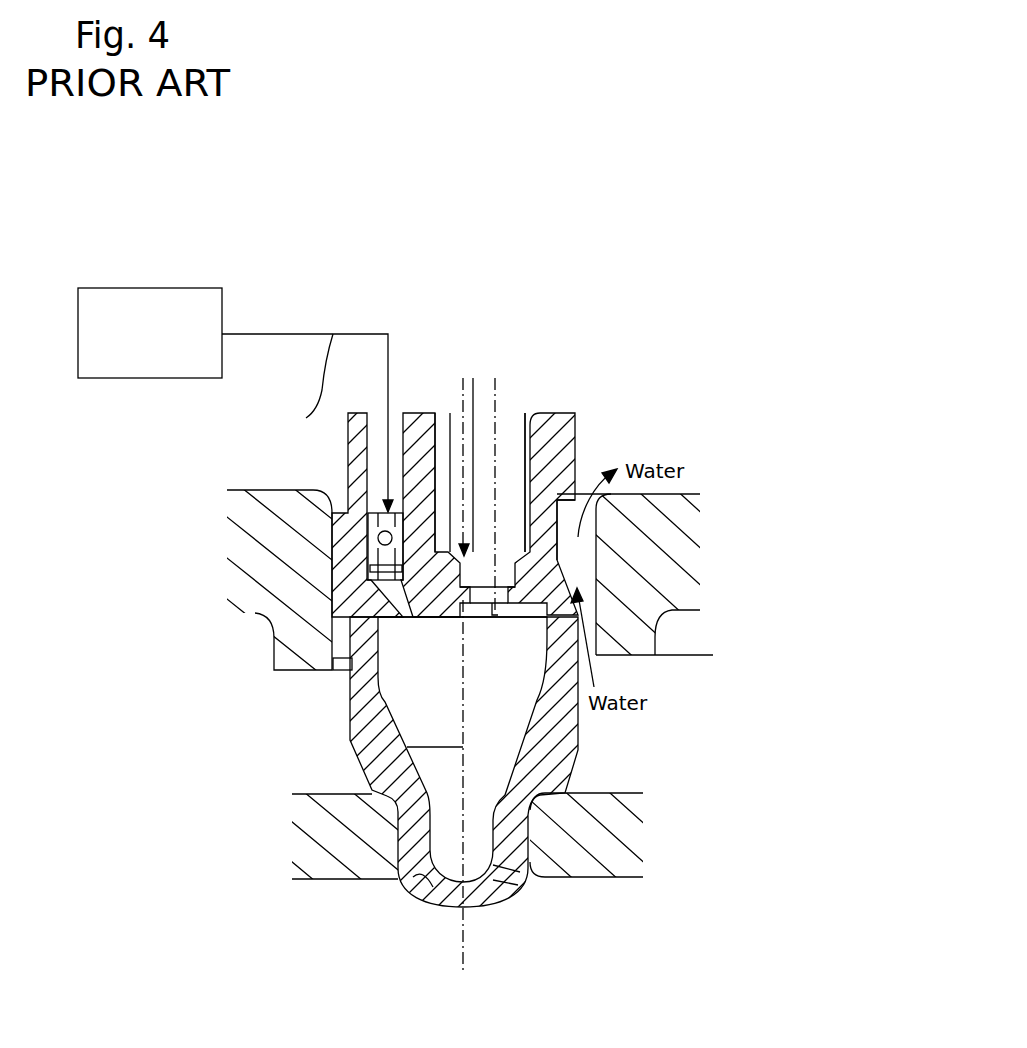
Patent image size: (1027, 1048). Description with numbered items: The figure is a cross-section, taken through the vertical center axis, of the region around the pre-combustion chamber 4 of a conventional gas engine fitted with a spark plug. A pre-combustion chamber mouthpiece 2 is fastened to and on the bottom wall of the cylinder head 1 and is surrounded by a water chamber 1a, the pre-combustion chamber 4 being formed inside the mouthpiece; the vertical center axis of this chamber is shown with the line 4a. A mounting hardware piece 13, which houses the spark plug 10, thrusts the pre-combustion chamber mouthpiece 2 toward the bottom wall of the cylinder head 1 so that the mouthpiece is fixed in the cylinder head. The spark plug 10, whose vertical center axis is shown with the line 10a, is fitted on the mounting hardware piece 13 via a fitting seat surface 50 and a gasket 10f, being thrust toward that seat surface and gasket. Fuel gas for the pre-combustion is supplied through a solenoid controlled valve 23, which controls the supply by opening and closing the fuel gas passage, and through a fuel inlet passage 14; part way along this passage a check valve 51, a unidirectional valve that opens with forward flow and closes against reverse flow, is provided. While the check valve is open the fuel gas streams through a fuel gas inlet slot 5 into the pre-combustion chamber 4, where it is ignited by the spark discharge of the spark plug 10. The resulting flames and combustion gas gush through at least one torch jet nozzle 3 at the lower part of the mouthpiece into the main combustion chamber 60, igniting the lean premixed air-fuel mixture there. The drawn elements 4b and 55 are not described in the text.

The cylinder head 1 is at (493, 816).
The water chamber 1a is at (696, 762).
The pre-combustion chamber mouthpiece 2 is at (484, 904).
The torch jet nozzle 3 is at (418, 887).
The pre-combustion chamber 4 is at (416, 762).
The line showing vertical center axis of pre-combustion chamber 4a is at (427, 720).
The outer surface of nozzle 4b is at (355, 677).
The fuel gas inlet slot 5 is at (395, 590).
The spark plug 10 is at (512, 468).
The line showing vertical center axis of spark plug 10a is at (497, 435).
The gasket 10f is at (573, 550).
The mounting hardware piece 13 is at (562, 423).
The fuel inlet passage 14 is at (373, 460).
The solenoid controlled valve 23 is at (150, 378).
The fitting seat surface 50 is at (472, 378).
The check valve 51 is at (354, 552).
The water jacket block 55 is at (597, 567).
The main combustion chamber 60 is at (326, 972).